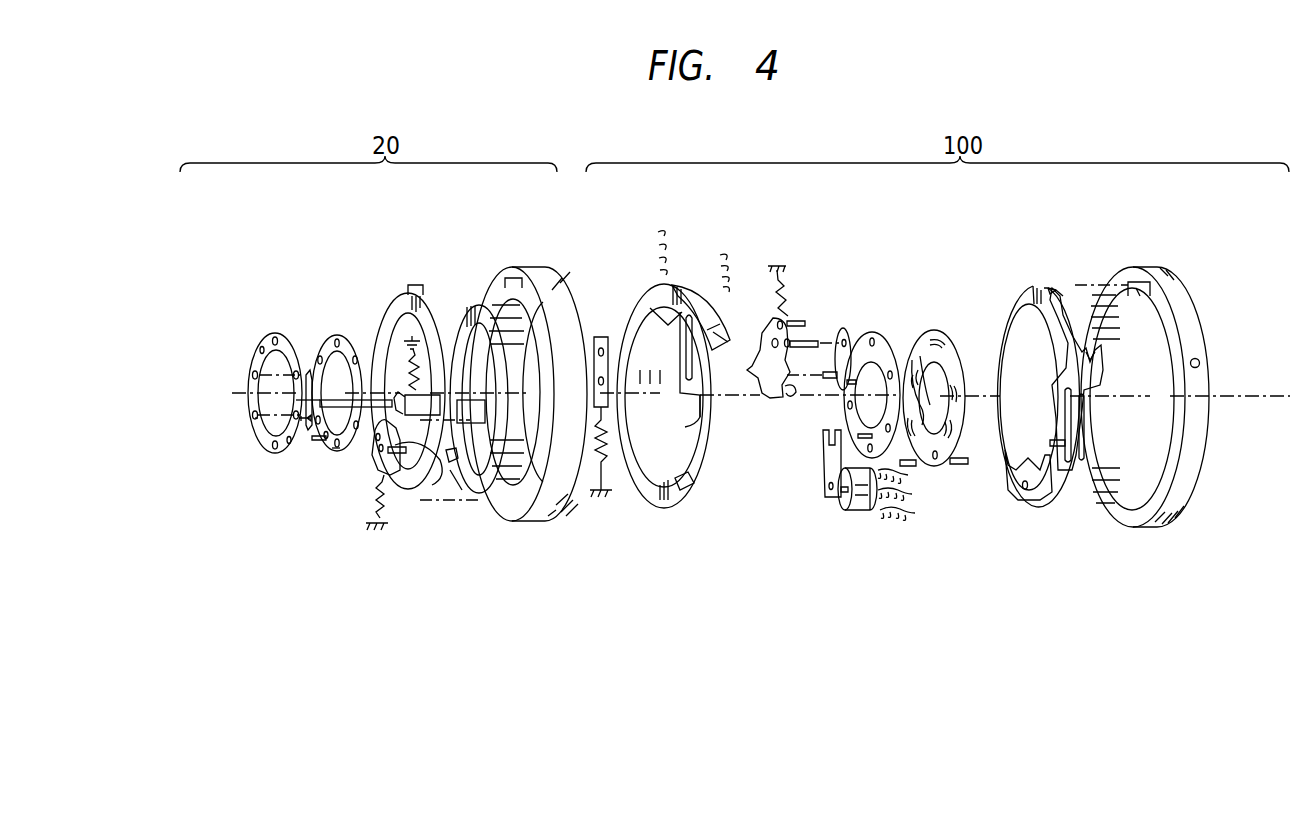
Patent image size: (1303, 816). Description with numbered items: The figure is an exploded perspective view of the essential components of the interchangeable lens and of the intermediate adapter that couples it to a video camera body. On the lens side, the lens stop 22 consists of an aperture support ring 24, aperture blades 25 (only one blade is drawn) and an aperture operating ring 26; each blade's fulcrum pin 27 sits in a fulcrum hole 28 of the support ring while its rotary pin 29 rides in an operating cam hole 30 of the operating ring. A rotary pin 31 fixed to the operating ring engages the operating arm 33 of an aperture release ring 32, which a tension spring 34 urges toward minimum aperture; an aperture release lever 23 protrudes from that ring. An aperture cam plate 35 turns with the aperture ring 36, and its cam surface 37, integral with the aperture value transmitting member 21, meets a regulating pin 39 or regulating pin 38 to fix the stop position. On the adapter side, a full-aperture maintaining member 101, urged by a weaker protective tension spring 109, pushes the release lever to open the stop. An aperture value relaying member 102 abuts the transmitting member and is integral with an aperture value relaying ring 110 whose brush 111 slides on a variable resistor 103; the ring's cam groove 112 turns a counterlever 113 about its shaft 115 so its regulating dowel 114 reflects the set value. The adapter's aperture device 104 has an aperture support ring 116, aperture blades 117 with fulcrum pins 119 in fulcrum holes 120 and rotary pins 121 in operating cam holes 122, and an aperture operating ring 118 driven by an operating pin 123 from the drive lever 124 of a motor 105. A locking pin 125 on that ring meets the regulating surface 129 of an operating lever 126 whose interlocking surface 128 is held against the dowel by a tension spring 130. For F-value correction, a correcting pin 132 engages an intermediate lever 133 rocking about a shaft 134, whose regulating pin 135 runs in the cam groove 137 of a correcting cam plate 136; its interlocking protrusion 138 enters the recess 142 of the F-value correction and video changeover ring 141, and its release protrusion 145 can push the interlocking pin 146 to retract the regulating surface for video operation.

The aperture value transmitting member 21 is at (460, 455).
The lens stop 22 is at (340, 307).
The aperture release lever 23 is at (485, 410).
The aperture support ring 24 is at (259, 342).
The aperture blade 25 is at (308, 368).
The aperture operating ring 26 is at (352, 455).
The fulcrum pin 27 is at (305, 420).
The fulcrum hole 28 is at (255, 419).
The rotary pin 29 is at (318, 442).
The operating cam hole 30 is at (335, 452).
The rotary pin 31 is at (370, 385).
The aperture release ring 32 is at (472, 305).
The operating arm 33 is at (436, 408).
The tension spring 34 is at (430, 345).
The aperture cam plate 35 is at (462, 490).
The aperture ring 36 is at (540, 520).
The cam surface 37 is at (447, 470).
The regulating pin 38 is at (408, 468).
The regulating pin 39 is at (400, 480).
The full-aperture maintaining member 101 is at (602, 335).
The aperture value relaying member 102 is at (683, 485).
The variable resistor 103 is at (697, 290).
The aperture device 104 is at (930, 282).
The motor 105 is at (850, 508).
The protective tension spring 109 is at (608, 480).
The aperture value relaying ring 110 is at (650, 290).
The brush 111 is at (650, 377).
The cam groove 112 is at (685, 400).
The counterlever 113 is at (820, 343).
The regulating dowel 114 is at (820, 387).
The shaft 115 is at (845, 328).
The aperture support ring 116 is at (940, 335).
The aperture blade 117 is at (928, 403).
The aperture operating ring 118 is at (880, 337).
The fulcrum pin 119 is at (905, 508).
The fulcrum hole 120 is at (866, 500).
The rotary pin 121 is at (920, 465).
The operating cam hole 122 is at (965, 465).
The operating pin 123 is at (860, 440).
The drive lever 124 is at (827, 460).
The locking pin 125 is at (862, 340).
The operating lever 126 is at (760, 322).
The interlocking surface 128 is at (745, 368).
The regulating surface 129 is at (788, 392).
The tension spring 130 is at (788, 264).
The correcting pin 132 is at (990, 457).
The intermediate lever 133 is at (1064, 480).
The shaft 134 is at (1032, 492).
The regulating pin 135 is at (1066, 443).
The correcting cam plate 136 is at (1022, 292).
The cam groove 137 is at (1082, 453).
The interlocking protrusion 138 is at (1055, 293).
The F-value correction and video changeover ring 141 is at (1207, 425).
The recess 142 is at (1132, 284).
The release protrusion 145 is at (1103, 364).
The interlocking pin 146 is at (803, 320).